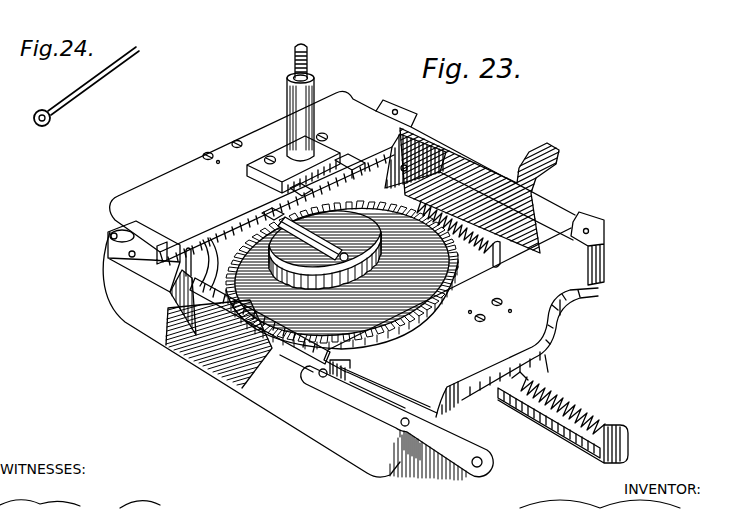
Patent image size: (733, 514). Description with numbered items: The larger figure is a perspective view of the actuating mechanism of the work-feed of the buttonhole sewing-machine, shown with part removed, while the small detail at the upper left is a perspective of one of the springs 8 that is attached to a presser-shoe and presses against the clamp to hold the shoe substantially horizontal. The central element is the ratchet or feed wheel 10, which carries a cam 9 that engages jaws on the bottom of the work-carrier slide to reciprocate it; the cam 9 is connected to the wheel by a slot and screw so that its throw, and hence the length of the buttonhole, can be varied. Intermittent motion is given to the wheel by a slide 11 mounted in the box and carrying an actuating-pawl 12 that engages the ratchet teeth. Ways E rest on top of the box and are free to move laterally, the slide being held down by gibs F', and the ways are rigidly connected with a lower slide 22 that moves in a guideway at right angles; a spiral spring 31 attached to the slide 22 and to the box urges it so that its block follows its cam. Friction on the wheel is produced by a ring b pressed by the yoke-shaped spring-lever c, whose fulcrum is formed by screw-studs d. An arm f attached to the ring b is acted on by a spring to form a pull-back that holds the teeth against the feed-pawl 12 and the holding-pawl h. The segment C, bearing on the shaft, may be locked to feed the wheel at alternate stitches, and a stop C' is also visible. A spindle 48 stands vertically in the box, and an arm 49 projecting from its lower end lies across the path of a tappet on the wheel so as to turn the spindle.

In FIG. 24, the spring 8 is at (68, 98).
In FIG. 23, the spindle 48 is at (308, 70).
In FIG. 23, the arm 49 is at (292, 192).
In FIG. 23, the cam 9 is at (448, 192).
In FIG. 23, the ratchet or feed wheel 10 is at (342, 272).
In FIG. 23, the slide 11 is at (224, 394).
In FIG. 23, the actuating-pawl 12 is at (188, 368).
In FIG. 23, the lower slide 22 is at (568, 436).
In FIG. 23, the spiral spring 31 is at (572, 404).
In FIG. 23, the ways E is at (354, 254).
In FIG. 23, the gibs F' is at (609, 259).
In FIG. 23, the segment C is at (479, 190).
In FIG. 23, the pawl stop C' is at (247, 207).
In FIG. 23, the ring b is at (452, 253).
In FIG. 23, the yoke-shaped spring-lever c is at (342, 164).
In FIG. 23, the screw-studs d is at (555, 270).
In FIG. 23, the arm f is at (400, 170).
In FIG. 23, the holding-pawl h is at (215, 247).